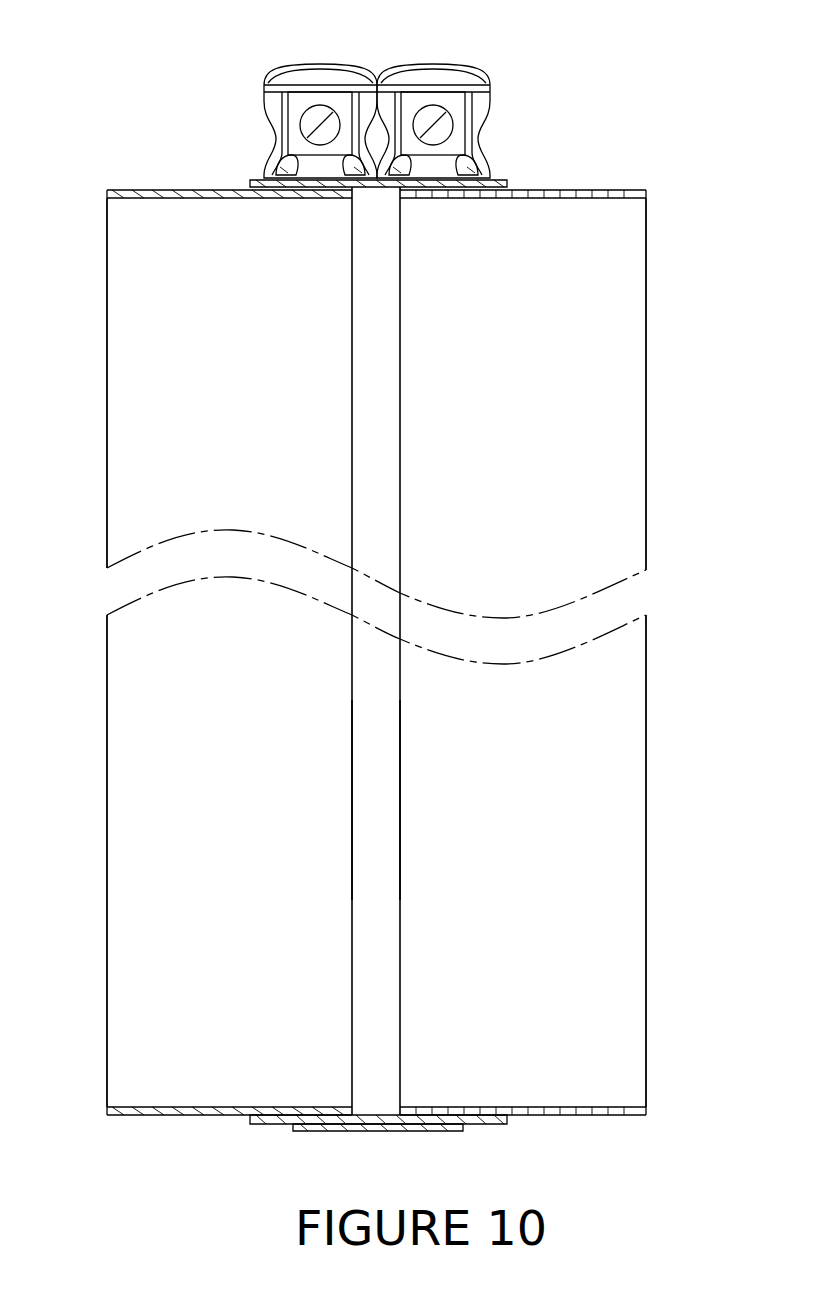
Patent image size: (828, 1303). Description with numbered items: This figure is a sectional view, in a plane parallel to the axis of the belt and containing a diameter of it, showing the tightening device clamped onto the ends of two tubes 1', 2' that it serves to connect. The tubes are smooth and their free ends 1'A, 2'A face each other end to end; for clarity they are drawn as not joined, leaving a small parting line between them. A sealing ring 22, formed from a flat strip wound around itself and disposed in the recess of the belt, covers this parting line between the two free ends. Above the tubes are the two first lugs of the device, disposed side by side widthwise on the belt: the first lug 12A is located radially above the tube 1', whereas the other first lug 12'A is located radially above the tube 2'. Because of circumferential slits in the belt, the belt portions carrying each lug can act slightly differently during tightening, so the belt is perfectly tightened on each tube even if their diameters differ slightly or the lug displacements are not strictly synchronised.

The first lug 12'A is at (299, 100).
The first lug 12A is at (478, 77).
The sealing ring 22 is at (377, 451).
The free end of tube 2'A is at (319, 800).
The free end of tube 1'A is at (428, 800).
The tube 2' is at (202, 652).
The tube 1' is at (545, 652).